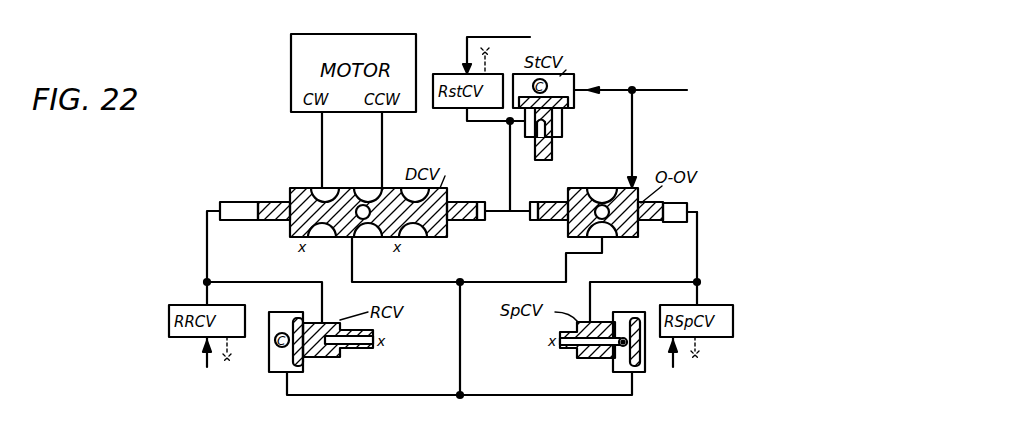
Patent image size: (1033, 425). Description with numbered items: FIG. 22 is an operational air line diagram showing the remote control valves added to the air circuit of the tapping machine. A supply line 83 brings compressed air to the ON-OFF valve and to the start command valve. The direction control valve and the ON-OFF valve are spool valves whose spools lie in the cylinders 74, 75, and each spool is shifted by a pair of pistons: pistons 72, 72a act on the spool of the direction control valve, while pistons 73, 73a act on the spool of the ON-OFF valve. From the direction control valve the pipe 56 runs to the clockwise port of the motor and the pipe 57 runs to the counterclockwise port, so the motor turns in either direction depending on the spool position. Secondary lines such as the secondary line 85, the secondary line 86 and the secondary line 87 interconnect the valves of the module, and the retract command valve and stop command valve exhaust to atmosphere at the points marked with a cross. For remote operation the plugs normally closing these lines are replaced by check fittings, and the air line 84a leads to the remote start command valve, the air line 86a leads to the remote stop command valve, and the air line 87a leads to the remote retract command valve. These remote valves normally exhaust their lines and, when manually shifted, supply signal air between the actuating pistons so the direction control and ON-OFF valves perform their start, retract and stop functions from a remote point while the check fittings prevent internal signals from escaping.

The pipe 56 is at (322, 140).
The pipe 57 is at (383, 152).
The piston 72 is at (270, 202).
The piston 72a is at (467, 223).
The piston 73 is at (551, 222).
The piston 73a is at (654, 203).
The cylinder 74 is at (245, 172).
The cylinder 75 is at (541, 202).
The supply line 83 is at (511, 36).
The air line 84a is at (493, 122).
The secondary line 85 is at (521, 266).
The secondary line 86 is at (697, 250).
The air line 86a is at (697, 282).
The secondary line 87 is at (208, 264).
The air line 87a is at (207, 282).